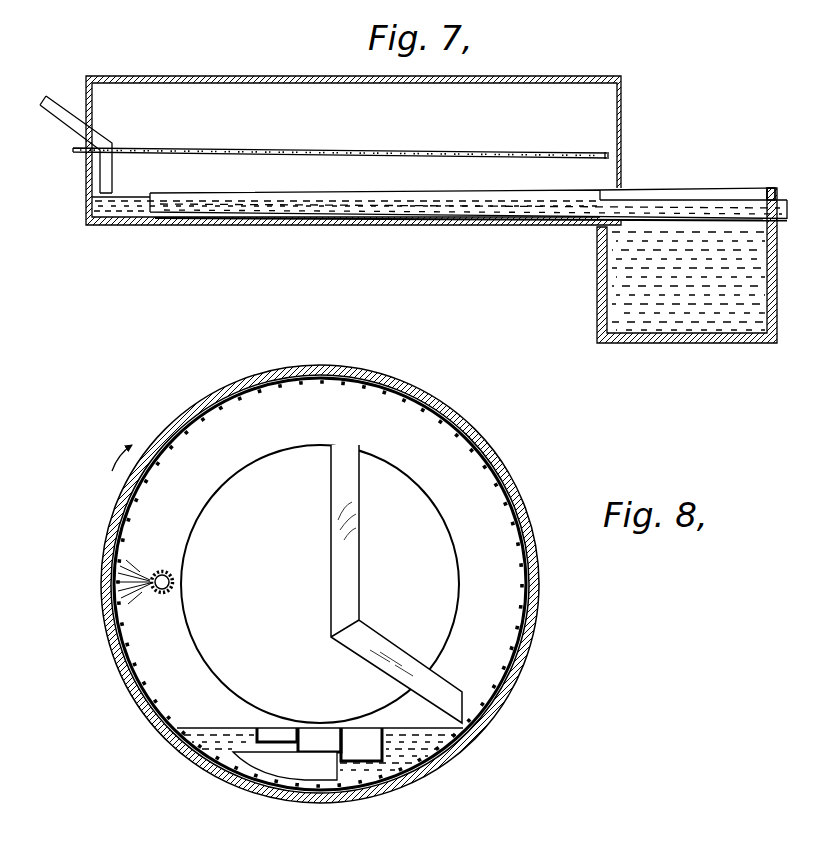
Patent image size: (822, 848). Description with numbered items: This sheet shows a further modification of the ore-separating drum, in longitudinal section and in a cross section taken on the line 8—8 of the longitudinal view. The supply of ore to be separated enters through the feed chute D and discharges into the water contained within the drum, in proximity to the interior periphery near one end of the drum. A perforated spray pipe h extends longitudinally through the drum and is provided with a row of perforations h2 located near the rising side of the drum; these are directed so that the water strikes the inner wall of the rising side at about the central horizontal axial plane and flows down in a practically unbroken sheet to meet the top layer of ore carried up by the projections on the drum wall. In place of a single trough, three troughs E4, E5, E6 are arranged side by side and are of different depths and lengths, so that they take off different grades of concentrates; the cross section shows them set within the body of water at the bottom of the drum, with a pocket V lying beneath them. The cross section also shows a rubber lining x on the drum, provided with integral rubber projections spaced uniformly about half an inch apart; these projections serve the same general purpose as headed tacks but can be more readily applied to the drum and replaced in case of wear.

In FIG. 7, the feed chute D is at (60, 112).
In FIG. 8, the feed chute D is at (336, 552).
In FIG. 7, the perforated spray pipe h is at (203, 148).
In FIG. 8, the perforated spray pipe h is at (174, 582).
In FIG. 7, the perforations h2 is at (187, 154).
In FIG. 8, the perforations h2 is at (158, 597).
In FIG. 7, the trough E4 is at (477, 200).
In FIG. 8, the trough E4 is at (272, 733).
In FIG. 7, the trough E5 is at (362, 200).
In FIG. 8, the trough E5 is at (325, 738).
In FIG. 7, the trough E6 is at (210, 198).
In FIG. 8, the trough E6 is at (371, 740).
In FIG. 7, the section line 8— 8 is at (582, 73).
In FIG. 8, the pocket V is at (281, 765).
In FIG. 8, the rubber lining x is at (535, 553).